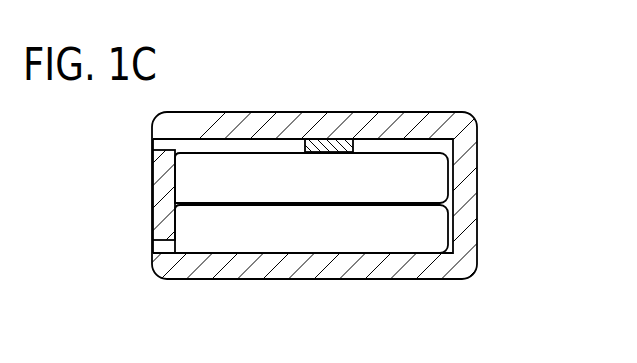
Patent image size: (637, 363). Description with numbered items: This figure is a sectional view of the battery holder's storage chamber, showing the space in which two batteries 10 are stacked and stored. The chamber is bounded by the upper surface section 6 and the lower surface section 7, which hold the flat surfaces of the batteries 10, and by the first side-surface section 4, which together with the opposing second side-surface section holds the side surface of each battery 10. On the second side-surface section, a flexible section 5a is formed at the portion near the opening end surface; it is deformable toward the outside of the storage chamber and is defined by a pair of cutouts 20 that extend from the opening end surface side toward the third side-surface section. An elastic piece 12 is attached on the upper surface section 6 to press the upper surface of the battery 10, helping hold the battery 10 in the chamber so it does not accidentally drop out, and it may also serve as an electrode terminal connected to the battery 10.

The first side-surface section 4 is at (477, 182).
The upper surface section 6 is at (405, 112).
The lower surface section 7 is at (362, 280).
The flexible section 5a is at (151, 192).
The cutouts 20 is at (151, 145).
The elastic piece 12 is at (330, 140).
The battery 10 is at (246, 165).